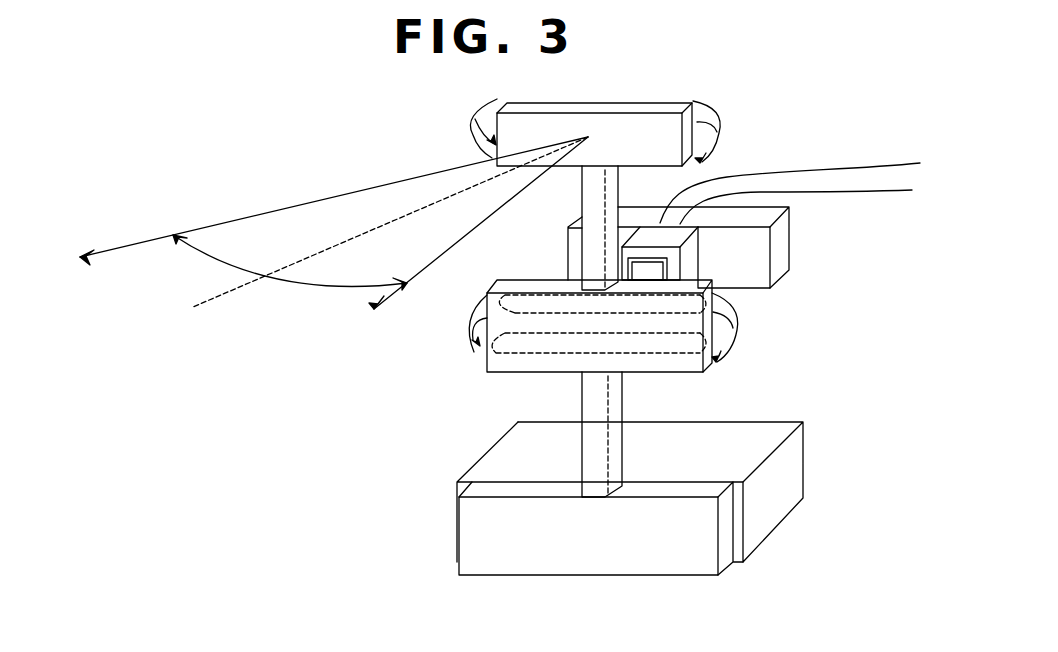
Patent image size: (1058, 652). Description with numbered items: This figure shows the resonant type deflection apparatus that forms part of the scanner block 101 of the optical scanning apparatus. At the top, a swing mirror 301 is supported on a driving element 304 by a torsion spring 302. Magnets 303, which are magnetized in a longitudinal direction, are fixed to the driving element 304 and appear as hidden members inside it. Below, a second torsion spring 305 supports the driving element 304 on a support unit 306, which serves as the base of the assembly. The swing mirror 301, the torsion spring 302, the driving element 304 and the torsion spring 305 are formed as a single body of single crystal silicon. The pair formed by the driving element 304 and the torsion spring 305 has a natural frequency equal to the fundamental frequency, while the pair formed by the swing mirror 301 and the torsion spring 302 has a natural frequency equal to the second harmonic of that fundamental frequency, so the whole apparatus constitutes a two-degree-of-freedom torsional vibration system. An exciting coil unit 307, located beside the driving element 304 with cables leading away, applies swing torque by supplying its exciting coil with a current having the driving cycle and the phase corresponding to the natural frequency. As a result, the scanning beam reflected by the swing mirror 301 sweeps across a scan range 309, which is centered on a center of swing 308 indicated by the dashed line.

The scanner block 101 is at (390, 162).
The swing mirror 301 is at (602, 133).
The torsion spring 302 is at (579, 192).
The magnets 303 is at (486, 340).
The driving element 304 is at (560, 373).
The torsion spring 305 is at (618, 404).
The support unit 306 is at (748, 435).
The exciting coil unit 307 is at (790, 248).
The center of swing 308 is at (232, 290).
The scan range 309 is at (325, 277).